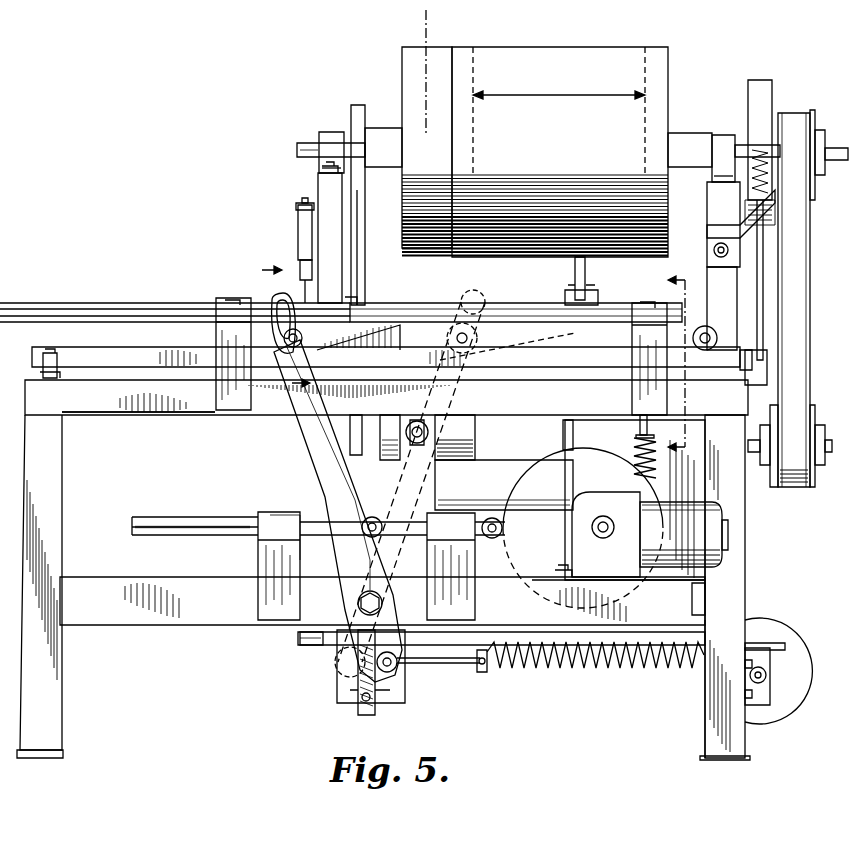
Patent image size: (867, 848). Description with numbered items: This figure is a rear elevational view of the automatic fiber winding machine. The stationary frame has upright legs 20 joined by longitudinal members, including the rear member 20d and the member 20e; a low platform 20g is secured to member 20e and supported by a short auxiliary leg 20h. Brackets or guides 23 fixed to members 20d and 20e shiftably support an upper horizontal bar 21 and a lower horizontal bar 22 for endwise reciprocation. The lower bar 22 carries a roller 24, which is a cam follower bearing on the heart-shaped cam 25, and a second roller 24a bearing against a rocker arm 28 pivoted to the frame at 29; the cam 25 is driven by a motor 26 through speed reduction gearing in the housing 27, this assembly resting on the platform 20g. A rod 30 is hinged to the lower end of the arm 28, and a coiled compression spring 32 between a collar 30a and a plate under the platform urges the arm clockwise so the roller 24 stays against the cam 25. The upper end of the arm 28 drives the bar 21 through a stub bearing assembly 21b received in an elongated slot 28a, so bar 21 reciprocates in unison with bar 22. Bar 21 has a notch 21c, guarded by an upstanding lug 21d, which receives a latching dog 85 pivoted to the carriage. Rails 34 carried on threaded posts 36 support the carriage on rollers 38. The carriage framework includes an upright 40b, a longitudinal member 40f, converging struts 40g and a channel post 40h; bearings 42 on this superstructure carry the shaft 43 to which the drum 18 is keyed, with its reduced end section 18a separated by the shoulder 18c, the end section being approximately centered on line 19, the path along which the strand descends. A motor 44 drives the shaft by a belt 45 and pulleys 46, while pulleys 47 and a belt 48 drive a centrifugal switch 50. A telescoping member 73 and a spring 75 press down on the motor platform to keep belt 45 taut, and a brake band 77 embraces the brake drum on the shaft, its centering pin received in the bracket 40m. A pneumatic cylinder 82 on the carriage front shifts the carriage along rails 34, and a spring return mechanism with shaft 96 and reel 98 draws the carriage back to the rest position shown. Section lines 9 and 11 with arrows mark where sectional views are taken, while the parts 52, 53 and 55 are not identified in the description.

The section line 9- 9 is at (677, 365).
The section line 11- 11 is at (269, 327).
The drum 18 is at (606, 52).
The reduced end section of drum 18a is at (410, 47).
The shoulder 18c is at (454, 48).
The line 19 is at (428, 16).
The upright legs 20 is at (35, 468).
The horizontal frame member 20d is at (96, 414).
The horizontal frame member 20e is at (100, 618).
The platform 20g is at (618, 597).
The auxiliary leg 20h is at (716, 738).
The horizontal bar 21 is at (108, 303).
The stub bearing assembly 21b is at (302, 338).
The notch 21c is at (368, 306).
The upstanding lug 21d is at (355, 298).
The horizontal bar 22 is at (156, 518).
The brackets or guides 23 is at (218, 340).
The roller 24 is at (492, 539).
The roller 24a is at (372, 516).
The heart-shaped cam 25 is at (583, 528).
The motor 26 is at (700, 535).
The housing 27 is at (597, 534).
The rocker arm 28 is at (318, 457).
The elongated slot 28a is at (284, 296).
The pivot 29 is at (356, 606).
The rod 30 is at (430, 660).
The collar 30a is at (482, 673).
The coiled compression spring 32 is at (570, 668).
The horizontal rails 34 is at (80, 356).
The posts 36 is at (40, 372).
The rollers 38 is at (710, 328).
The upright 40b is at (312, 508).
The longitudinal member 40f is at (563, 340).
The struts 40g is at (710, 268).
The post 40h is at (326, 196).
The apertured bracket 40m is at (722, 228).
The bearings 42 is at (335, 134).
The shaft 43 is at (304, 146).
The motor 44 is at (568, 442).
The belt 45 is at (800, 245).
The pulleys 46 is at (812, 196).
The pulleys 47 is at (365, 115).
The belt 48 is at (360, 228).
The centrifugal switch 50 is at (478, 442).
The spring rod 52 is at (520, 668).
The bolt 53 is at (320, 648).
The bracket 55 is at (398, 700).
The telescoping member 73 is at (640, 430).
The coiled compression spring 75 is at (636, 448).
The brake band 77 is at (762, 92).
The pneumatic cylinder 82 is at (454, 489).
The pawl or latching dog 85 is at (585, 282).
The shaft 96 is at (765, 684).
The spool or reel 98 is at (800, 674).